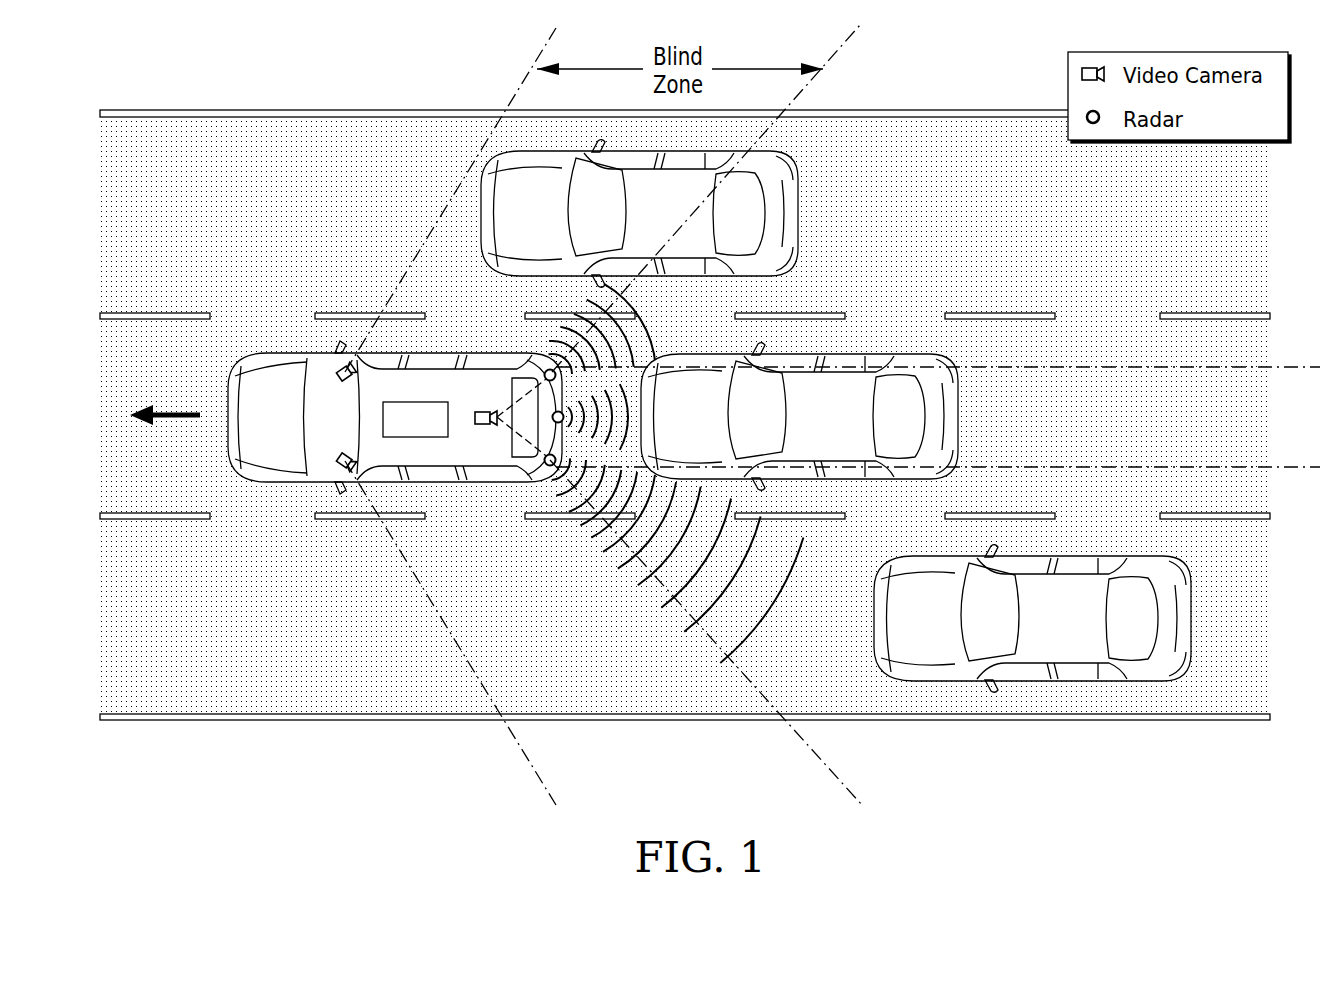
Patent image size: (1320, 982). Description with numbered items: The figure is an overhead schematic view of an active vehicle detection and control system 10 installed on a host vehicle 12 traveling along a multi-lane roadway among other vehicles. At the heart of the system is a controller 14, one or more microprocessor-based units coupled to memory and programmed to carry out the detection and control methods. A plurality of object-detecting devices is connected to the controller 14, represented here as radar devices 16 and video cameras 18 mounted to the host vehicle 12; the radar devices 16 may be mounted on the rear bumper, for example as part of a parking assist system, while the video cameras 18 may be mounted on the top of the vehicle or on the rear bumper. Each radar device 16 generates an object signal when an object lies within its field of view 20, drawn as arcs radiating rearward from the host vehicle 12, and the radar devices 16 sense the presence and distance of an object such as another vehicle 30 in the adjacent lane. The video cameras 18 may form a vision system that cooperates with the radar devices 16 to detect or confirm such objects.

The active vehicle detection and control system 10 is at (347, 145).
The host vehicle 12 is at (275, 450).
The controller 14 is at (415, 400).
The radar devices 16 is at (548, 465).
The video cameras 18 is at (332, 370).
The field of view 20 is at (667, 588).
The another vehicle 30 is at (875, 417).